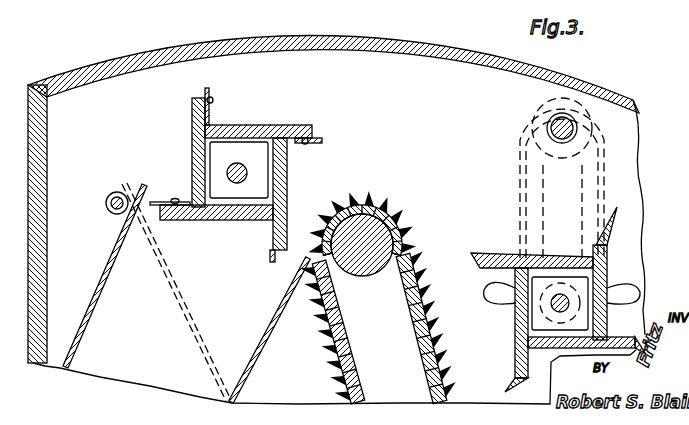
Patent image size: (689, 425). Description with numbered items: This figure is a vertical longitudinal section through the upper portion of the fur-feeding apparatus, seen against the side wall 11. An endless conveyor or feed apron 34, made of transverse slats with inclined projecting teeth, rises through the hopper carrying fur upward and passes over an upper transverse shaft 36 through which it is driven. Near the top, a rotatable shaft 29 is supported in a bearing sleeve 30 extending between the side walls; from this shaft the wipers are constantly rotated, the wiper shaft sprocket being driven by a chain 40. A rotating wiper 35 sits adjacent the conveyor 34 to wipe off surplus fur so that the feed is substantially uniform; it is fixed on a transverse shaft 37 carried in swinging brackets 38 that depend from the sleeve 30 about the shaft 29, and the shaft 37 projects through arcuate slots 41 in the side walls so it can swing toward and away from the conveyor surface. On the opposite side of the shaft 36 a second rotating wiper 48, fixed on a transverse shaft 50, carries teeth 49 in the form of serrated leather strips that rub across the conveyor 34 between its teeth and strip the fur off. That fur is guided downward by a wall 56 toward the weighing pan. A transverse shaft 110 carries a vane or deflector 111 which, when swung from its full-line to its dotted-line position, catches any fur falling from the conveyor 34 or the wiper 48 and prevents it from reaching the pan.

The side wall 11 is at (375, 65).
The transverse shaft 110 is at (108, 207).
The vane or deflector 111 is at (97, 312).
The wall 56 is at (276, 328).
The second rotating wiper 48 is at (243, 125).
The teeth 49 is at (312, 139).
The transverse shaft 50 is at (248, 175).
The upper transverse shaft 36 is at (355, 208).
The endless conveyor or feed apron 34 is at (417, 260).
The rotatable shaft 29 is at (572, 122).
The bearing sleeve 30 is at (577, 133).
The chain 40 is at (612, 170).
The swinging brackets 38 is at (588, 196).
The rotating wiper 35 is at (605, 267).
The transverse shaft 37 is at (570, 302).
The arcuate slots 41 is at (500, 292).